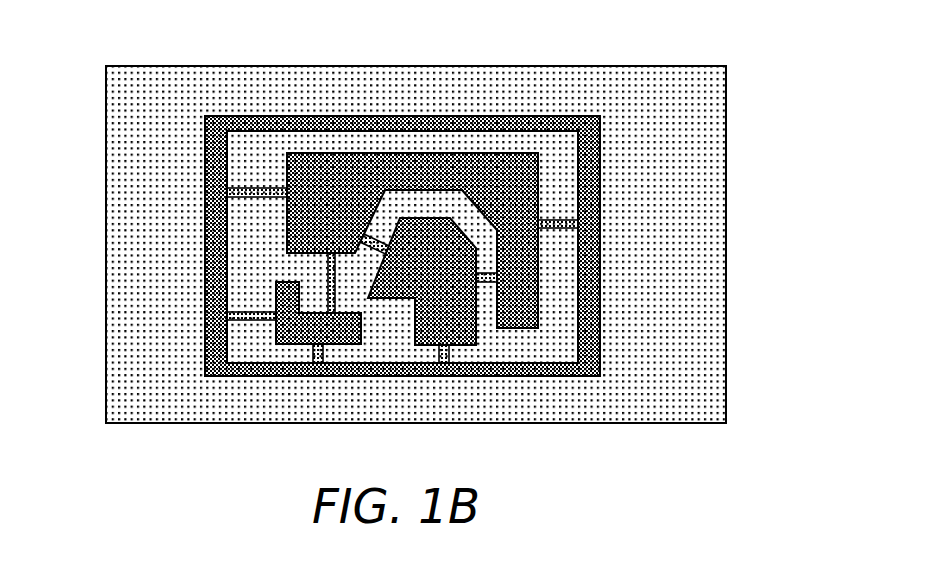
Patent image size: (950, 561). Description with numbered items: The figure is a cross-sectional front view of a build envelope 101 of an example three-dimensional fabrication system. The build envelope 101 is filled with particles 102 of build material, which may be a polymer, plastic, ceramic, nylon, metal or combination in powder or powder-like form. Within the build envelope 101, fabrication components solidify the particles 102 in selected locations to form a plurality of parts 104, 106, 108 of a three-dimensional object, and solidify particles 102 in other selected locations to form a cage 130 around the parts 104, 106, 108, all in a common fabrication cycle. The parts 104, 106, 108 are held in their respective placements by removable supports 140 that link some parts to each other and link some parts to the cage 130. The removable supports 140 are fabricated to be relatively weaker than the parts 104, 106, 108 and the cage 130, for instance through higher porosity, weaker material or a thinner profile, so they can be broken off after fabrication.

The build envelope 101 is at (429, 249).
The particles of build material 102 is at (726, 177).
The part 104 is at (295, 345).
The part 106 is at (477, 333).
The part 108 is at (500, 153).
The cage 130 is at (600, 292).
The removable supports 140 is at (250, 197).